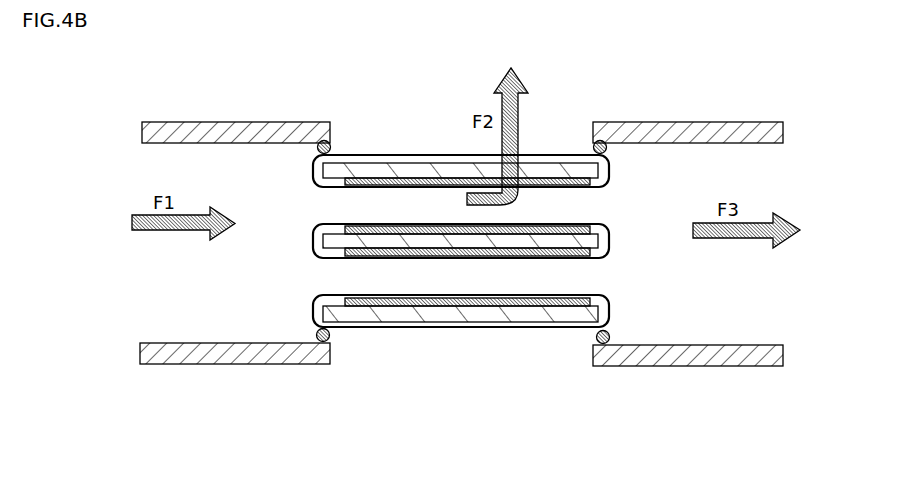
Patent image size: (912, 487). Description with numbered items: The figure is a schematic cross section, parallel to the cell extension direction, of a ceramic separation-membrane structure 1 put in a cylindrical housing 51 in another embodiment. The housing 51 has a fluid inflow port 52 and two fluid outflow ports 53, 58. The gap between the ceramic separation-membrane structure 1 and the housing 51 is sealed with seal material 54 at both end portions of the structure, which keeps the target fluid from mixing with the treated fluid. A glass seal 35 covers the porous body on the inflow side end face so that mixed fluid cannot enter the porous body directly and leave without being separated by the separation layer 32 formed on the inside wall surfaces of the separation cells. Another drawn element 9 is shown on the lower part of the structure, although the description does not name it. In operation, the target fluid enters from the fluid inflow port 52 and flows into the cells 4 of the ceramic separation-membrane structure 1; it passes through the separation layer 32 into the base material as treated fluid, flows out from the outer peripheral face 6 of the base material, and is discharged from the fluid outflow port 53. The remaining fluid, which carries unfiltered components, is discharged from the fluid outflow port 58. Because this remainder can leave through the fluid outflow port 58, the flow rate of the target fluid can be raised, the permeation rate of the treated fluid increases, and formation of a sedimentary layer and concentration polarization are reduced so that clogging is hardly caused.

The ceramic separation-membrane structure 1 is at (465, 324).
The cells 4 is at (503, 270).
The outer peripheral face 6 is at (413, 163).
The lower plate 9 is at (417, 312).
The separation layer 32 is at (379, 308).
The glass seal 35 is at (338, 155).
The housing 51 is at (685, 121).
The fluid inflow port 52 is at (173, 294).
The fluid outflow port 53 is at (570, 138).
The seal material 54 is at (333, 344).
The fluid outflow port 58 is at (762, 170).